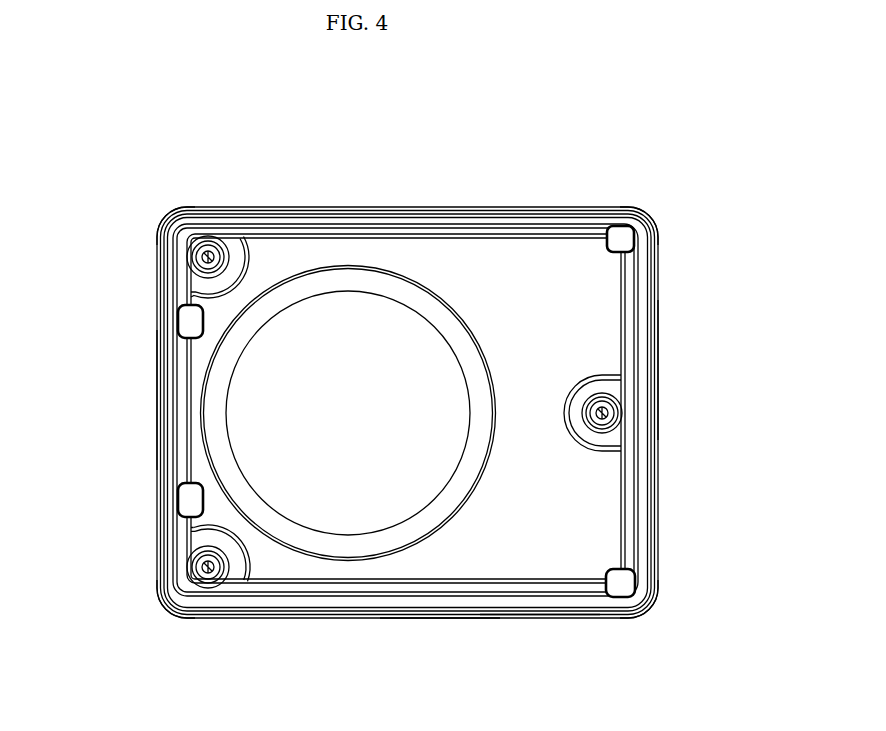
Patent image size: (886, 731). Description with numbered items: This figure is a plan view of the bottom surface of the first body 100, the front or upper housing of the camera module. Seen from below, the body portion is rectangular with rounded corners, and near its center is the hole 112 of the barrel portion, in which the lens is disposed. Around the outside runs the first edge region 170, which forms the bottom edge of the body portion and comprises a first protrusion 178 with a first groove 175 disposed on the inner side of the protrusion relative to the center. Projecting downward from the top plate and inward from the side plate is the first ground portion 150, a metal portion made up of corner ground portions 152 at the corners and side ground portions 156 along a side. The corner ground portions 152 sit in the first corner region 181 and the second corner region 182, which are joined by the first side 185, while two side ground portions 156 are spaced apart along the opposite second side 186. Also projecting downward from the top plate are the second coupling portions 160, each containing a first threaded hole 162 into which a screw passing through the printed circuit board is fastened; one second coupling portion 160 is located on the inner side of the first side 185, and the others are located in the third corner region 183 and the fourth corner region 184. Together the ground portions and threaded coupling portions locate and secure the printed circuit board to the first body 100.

The first body 100 is at (67, 85).
The hole 112 is at (354, 376).
The first ground portion 150 is at (603, 238).
The first-1 ground portion 152 is at (618, 233).
The first-2 ground portion 156 is at (179, 320).
The second coupling portion 160 is at (243, 240).
The first threaded hole 162 is at (207, 255).
The first edge region 170 is at (663, 288).
The first groove 175 is at (460, 599).
The first protrusion 178 is at (533, 619).
The first corner region 181 is at (650, 213).
The second corner region 182 is at (652, 612).
The third corner region 183 is at (163, 220).
The fourth corner region 184 is at (163, 607).
The first side 185 is at (660, 362).
The second side 186 is at (155, 396).